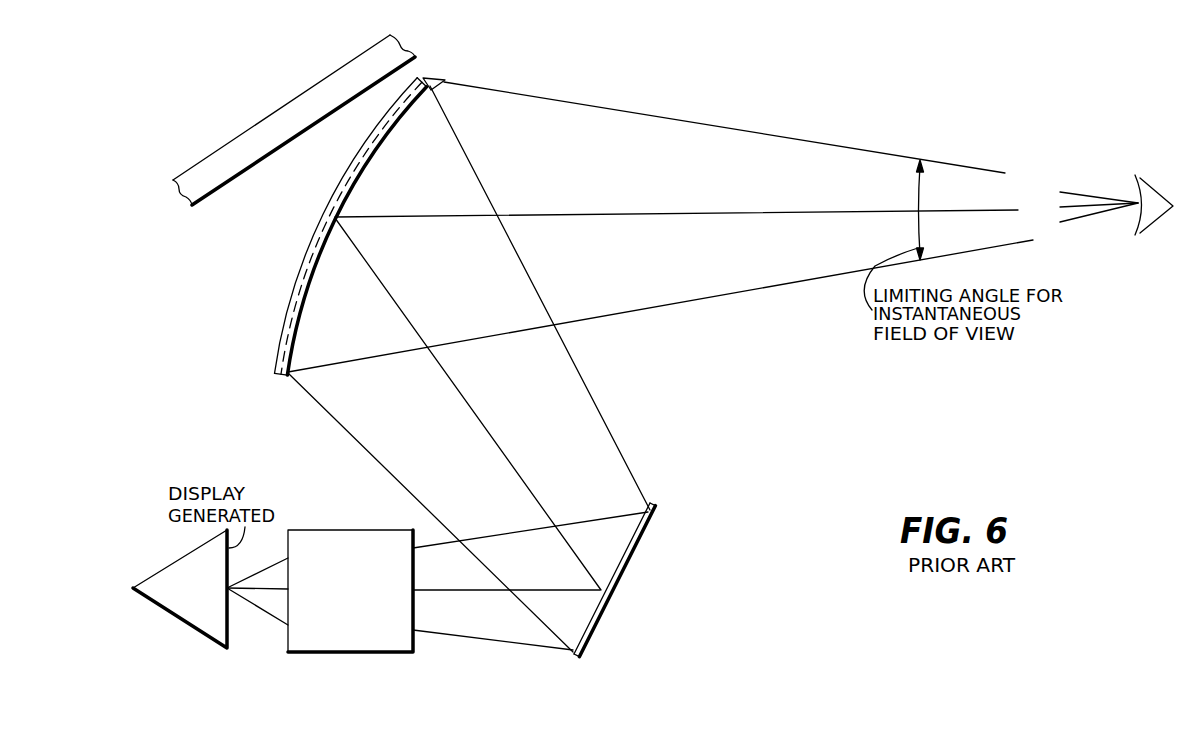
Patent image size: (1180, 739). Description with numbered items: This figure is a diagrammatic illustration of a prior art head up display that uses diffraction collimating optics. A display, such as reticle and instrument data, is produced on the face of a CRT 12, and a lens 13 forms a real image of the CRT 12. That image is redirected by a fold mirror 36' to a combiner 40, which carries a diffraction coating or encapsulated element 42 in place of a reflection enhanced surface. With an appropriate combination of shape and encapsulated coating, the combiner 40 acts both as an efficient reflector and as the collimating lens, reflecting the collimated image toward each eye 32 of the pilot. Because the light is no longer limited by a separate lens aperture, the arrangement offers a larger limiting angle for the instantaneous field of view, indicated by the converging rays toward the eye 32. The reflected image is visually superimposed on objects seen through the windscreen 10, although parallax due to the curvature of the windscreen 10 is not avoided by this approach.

The windscreen 10 is at (313, 85).
The combiner 40 is at (273, 355).
The diffraction coating or encapsulated element 42 is at (425, 78).
The eye 32 is at (1140, 178).
The CRT 12 is at (185, 625).
The lens 13 is at (370, 653).
The fold mirror 36' is at (645, 580).